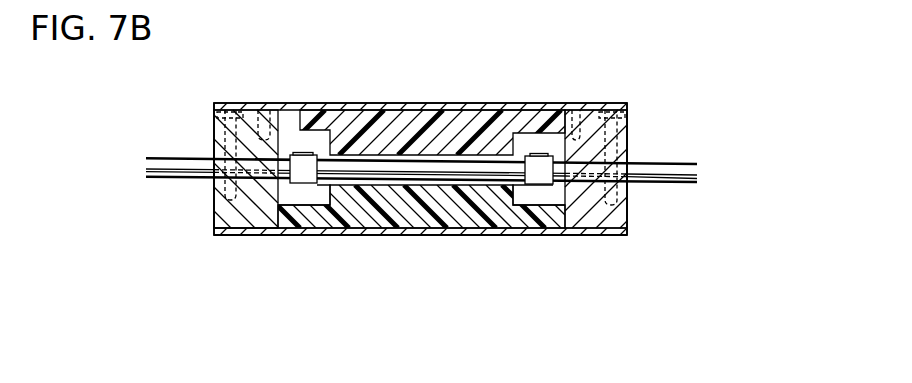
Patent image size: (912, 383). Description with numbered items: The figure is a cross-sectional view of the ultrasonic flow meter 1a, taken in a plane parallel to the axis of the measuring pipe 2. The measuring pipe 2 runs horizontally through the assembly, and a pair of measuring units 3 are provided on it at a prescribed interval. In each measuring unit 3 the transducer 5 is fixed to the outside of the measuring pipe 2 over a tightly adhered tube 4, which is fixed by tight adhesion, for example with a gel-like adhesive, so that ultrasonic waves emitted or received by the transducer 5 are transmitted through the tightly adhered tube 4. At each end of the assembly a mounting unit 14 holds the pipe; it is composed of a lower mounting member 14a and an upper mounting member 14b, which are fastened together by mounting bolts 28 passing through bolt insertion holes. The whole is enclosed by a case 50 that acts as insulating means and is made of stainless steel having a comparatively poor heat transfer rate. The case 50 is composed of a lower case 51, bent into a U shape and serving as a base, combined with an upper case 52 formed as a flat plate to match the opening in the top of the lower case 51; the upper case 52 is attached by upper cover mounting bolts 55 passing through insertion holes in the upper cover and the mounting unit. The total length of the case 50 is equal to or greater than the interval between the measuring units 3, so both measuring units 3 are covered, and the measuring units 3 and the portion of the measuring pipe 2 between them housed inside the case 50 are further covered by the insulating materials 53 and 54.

The ultrasonic flow meter 1a is at (455, 252).
The measuring pipe 2 is at (660, 183).
The measuring unit 3 is at (327, 185).
The tightly adhered tube 4 is at (312, 192).
The transducer 5 is at (437, 173).
The mounting unit 14 is at (437, 221).
The lower mounting member 14a is at (228, 229).
The upper mounting member 14b is at (214, 141).
The mounting bolt 28 is at (216, 113).
The case 50 is at (212, 215).
The lower case 51 is at (247, 233).
The upper case 52 is at (233, 102).
The insulating material 53 is at (393, 230).
The insulating material 54 is at (462, 109).
The upper cover mounting bolt 55 is at (263, 108).